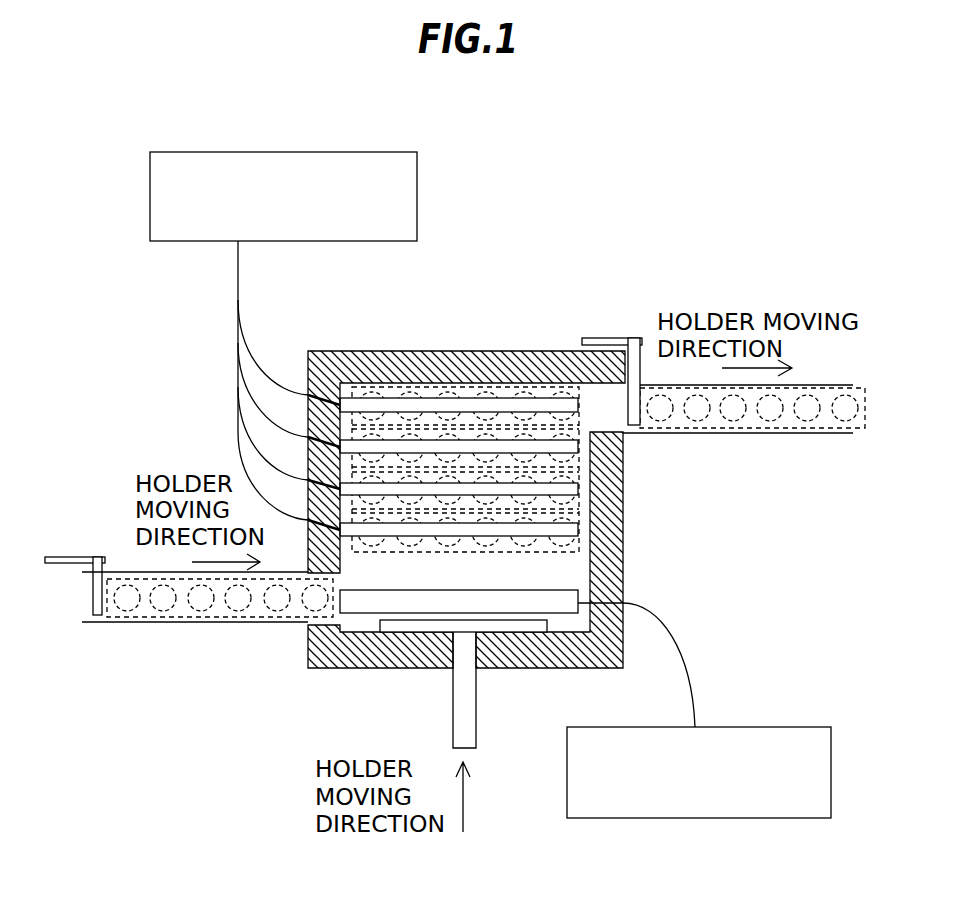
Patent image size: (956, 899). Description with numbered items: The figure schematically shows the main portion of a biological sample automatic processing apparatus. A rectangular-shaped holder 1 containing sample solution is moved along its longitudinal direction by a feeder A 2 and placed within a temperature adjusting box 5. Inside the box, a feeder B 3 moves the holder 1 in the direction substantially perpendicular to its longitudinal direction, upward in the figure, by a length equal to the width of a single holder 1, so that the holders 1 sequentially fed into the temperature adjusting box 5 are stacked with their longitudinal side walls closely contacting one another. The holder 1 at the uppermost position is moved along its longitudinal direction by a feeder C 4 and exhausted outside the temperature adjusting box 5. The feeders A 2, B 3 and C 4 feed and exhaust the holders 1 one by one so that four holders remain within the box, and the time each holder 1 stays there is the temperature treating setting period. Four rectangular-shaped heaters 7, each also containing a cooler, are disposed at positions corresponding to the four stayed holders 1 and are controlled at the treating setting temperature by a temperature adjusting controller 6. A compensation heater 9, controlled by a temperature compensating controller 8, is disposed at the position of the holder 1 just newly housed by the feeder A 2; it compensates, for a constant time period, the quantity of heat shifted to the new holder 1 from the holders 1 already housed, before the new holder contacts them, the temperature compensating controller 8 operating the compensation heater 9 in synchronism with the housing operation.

The holder 1 is at (118, 622).
The feeder A 2 is at (77, 557).
The feeder B 3 is at (452, 706).
The feeder C 4 is at (615, 338).
The temperature adjusting box 5 is at (338, 351).
The temperature adjusting controller 6 is at (284, 152).
The heater 7 is at (578, 405).
The temperature compensating controller 8 is at (735, 727).
The compensation heater 9 is at (545, 592).